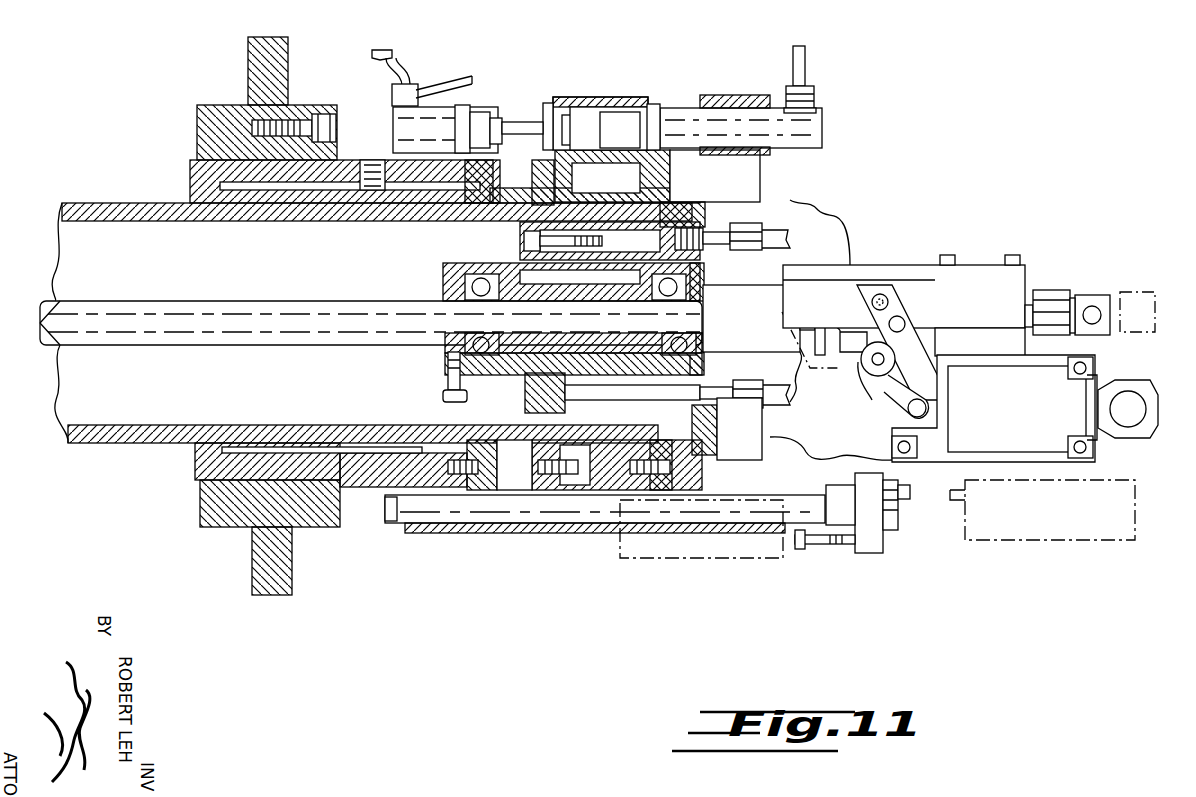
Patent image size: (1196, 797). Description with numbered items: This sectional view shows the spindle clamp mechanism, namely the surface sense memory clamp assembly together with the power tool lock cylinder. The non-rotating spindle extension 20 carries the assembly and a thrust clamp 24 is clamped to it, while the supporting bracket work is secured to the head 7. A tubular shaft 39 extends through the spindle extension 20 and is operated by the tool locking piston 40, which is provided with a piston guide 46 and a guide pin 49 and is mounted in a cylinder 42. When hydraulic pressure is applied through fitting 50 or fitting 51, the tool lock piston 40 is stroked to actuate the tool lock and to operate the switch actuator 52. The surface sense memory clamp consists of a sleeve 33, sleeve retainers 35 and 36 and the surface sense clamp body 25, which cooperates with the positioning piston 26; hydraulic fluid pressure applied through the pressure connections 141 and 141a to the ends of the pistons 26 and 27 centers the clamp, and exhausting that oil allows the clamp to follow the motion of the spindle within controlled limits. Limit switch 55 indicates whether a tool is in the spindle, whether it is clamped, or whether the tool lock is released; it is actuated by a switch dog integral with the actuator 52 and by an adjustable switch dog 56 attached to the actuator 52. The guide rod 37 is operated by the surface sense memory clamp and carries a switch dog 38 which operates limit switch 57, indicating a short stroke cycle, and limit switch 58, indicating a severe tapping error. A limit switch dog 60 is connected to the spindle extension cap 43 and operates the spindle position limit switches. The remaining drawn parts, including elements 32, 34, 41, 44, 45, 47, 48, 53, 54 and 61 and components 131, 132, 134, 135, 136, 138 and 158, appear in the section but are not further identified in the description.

The head 7 is at (242, 576).
The spindle extension 20 is at (72, 205).
The thrust clamp 24 is at (318, 512).
The surface sense clamp body 25 is at (622, 100).
The positioning piston 26 is at (628, 112).
The piston 27 is at (522, 122).
The sleeve 32 is at (288, 204).
The sleeve 33 is at (548, 204).
The plate 34 is at (474, 160).
The sleeve retainer 35 is at (525, 179).
The sleeve retainer 36 is at (672, 170).
The guide rod 37 is at (516, 510).
The switch dog 38 is at (870, 548).
The tubular shaft 39 is at (240, 346).
The tool locking piston 40 is at (452, 263).
The bearing 41 is at (465, 284).
The cylinder 42 is at (560, 375).
The spindle extension cap 43 is at (705, 210).
The block 44 is at (530, 340).
The bolt 45 is at (596, 470).
The piston guide 46 is at (446, 384).
The valve body 47 is at (770, 354).
The link 48 is at (860, 380).
The guide pin 49 is at (442, 398).
The fitting 50 is at (800, 222).
The fitting 51 is at (712, 420).
The switch actuator 52 is at (988, 265).
The fitting 53 is at (1070, 294).
The nut 54 is at (1034, 288).
The limit switch 55 is at (972, 443).
The adjustable switch dog 56 is at (906, 285).
The limit switch 57 is at (1068, 540).
The limit switch 58 is at (700, 558).
The limit switch dog 60 is at (1100, 355).
The block 61 is at (1000, 346).
The cylinder 131 is at (818, 126).
The cylinder 132 is at (398, 128).
The rod 134 is at (498, 118).
The plate 135 is at (548, 103).
The cylinder head 136 is at (586, 95).
The ring 138 is at (656, 104).
The pressure connection 141 is at (808, 60).
The pressure connection 141a is at (392, 50).
The bolt 158 is at (324, 114).